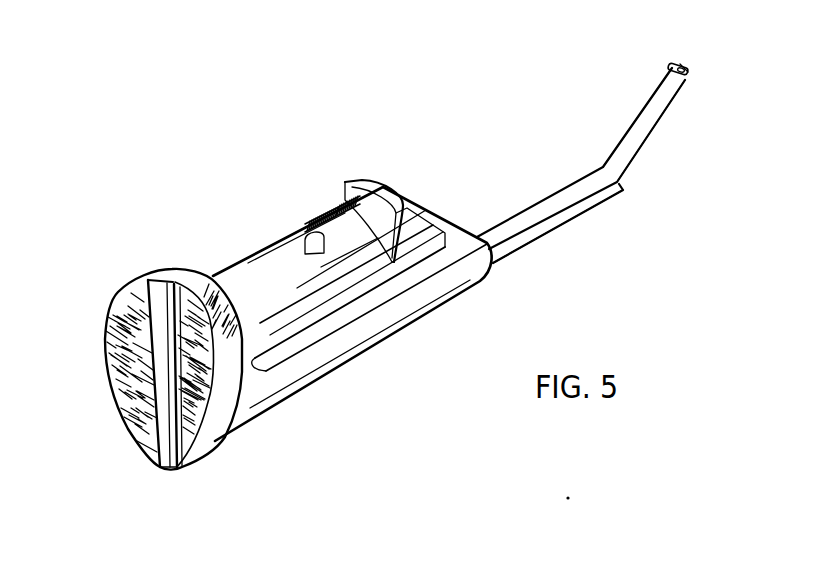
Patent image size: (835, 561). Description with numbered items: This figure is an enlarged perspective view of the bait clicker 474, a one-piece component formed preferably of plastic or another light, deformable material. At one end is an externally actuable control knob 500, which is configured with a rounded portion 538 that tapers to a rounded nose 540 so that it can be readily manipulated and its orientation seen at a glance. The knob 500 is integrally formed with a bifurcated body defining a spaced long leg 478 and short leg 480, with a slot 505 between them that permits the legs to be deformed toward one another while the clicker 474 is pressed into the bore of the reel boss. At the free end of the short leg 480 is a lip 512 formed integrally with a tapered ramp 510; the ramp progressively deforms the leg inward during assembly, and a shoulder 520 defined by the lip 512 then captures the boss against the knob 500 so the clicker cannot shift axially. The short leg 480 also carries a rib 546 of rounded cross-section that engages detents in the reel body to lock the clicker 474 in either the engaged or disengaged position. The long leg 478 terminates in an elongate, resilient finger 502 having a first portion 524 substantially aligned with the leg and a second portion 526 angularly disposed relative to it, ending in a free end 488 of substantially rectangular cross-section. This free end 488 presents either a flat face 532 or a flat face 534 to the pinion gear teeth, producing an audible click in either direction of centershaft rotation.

The bait clicker 474 is at (330, 392).
The long leg 478 is at (505, 262).
The short leg 480 is at (252, 297).
The free end of finger 488 is at (684, 64).
The control knob 500 is at (115, 358).
The finger 502 is at (591, 156).
The slot 505 is at (360, 312).
The tapered ramp 510 is at (413, 201).
The lip 512 is at (376, 183).
The shoulder 520 is at (358, 200).
The first portion of finger 524 is at (557, 231).
The second portion of finger 526 is at (638, 153).
The flat face 532 is at (671, 66).
The flat face 534 is at (690, 73).
The rounded portion of knob 538 is at (168, 278).
The rounded nose 540 is at (182, 468).
The rib 546 is at (318, 232).